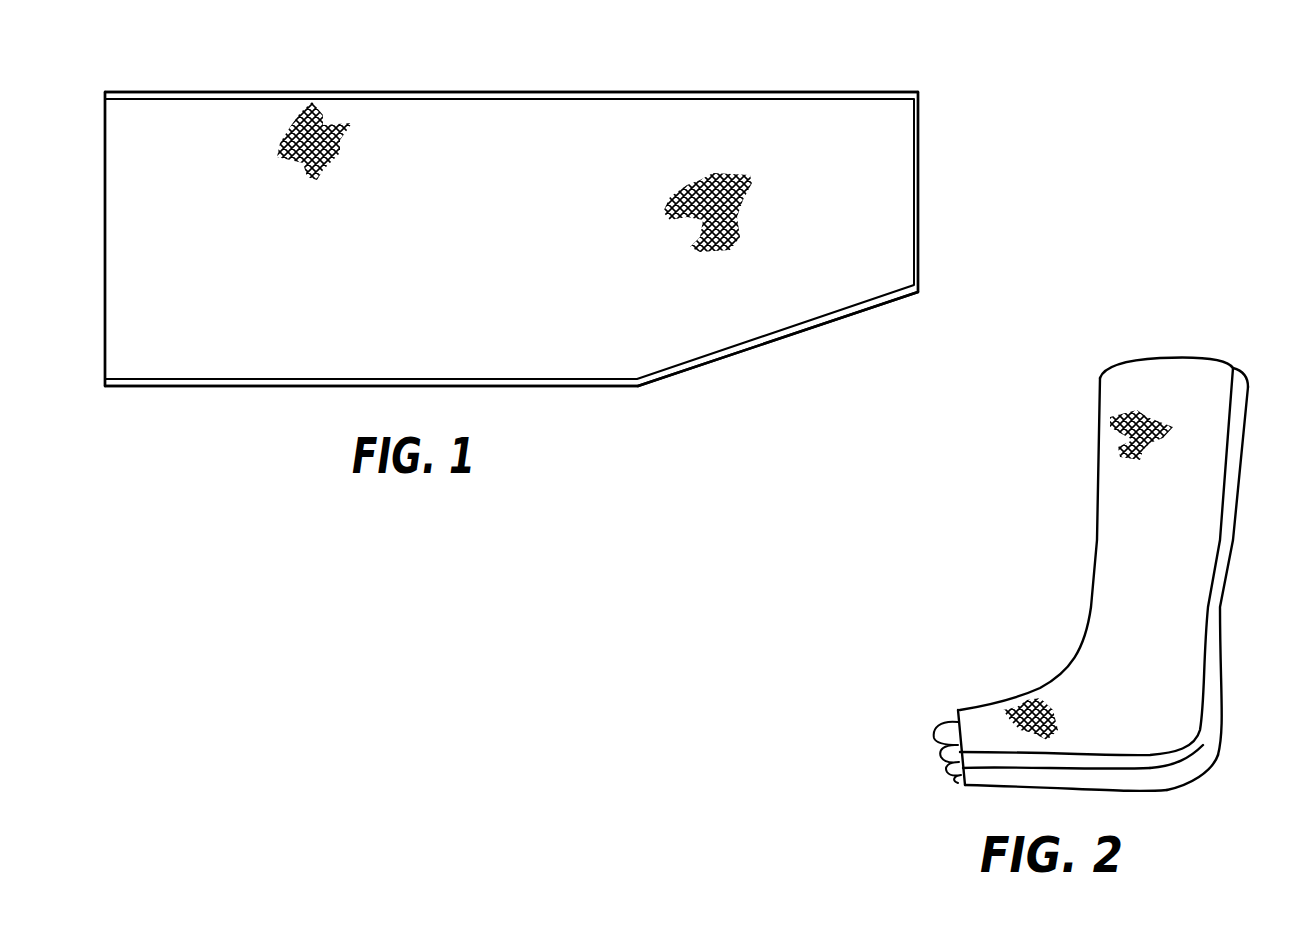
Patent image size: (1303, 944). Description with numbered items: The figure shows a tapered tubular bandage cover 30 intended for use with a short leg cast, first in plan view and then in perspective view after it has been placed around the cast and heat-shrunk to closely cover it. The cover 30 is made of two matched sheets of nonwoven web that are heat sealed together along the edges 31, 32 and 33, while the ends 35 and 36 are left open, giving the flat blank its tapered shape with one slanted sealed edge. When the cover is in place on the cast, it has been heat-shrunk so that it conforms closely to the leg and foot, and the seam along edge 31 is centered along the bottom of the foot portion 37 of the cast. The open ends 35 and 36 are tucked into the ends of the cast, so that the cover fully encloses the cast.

In FIG. 1, the tapered tubular bandage cover 30 is at (609, 386).
In FIG. 1, the edge 31 is at (800, 334).
In FIG. 2, the edge 31 is at (1085, 770).
In FIG. 1, the edge 32 is at (557, 91).
In FIG. 1, the edge 33 is at (293, 388).
In FIG. 2, the edge 33 is at (1228, 511).
In FIG. 1, the open end 35 is at (918, 177).
In FIG. 2, the open end 35 is at (958, 718).
In FIG. 1, the open end 36 is at (105, 224).
In FIG. 2, the open end 36 is at (1197, 357).
In FIG. 2, the foot portion 37 is at (1195, 731).